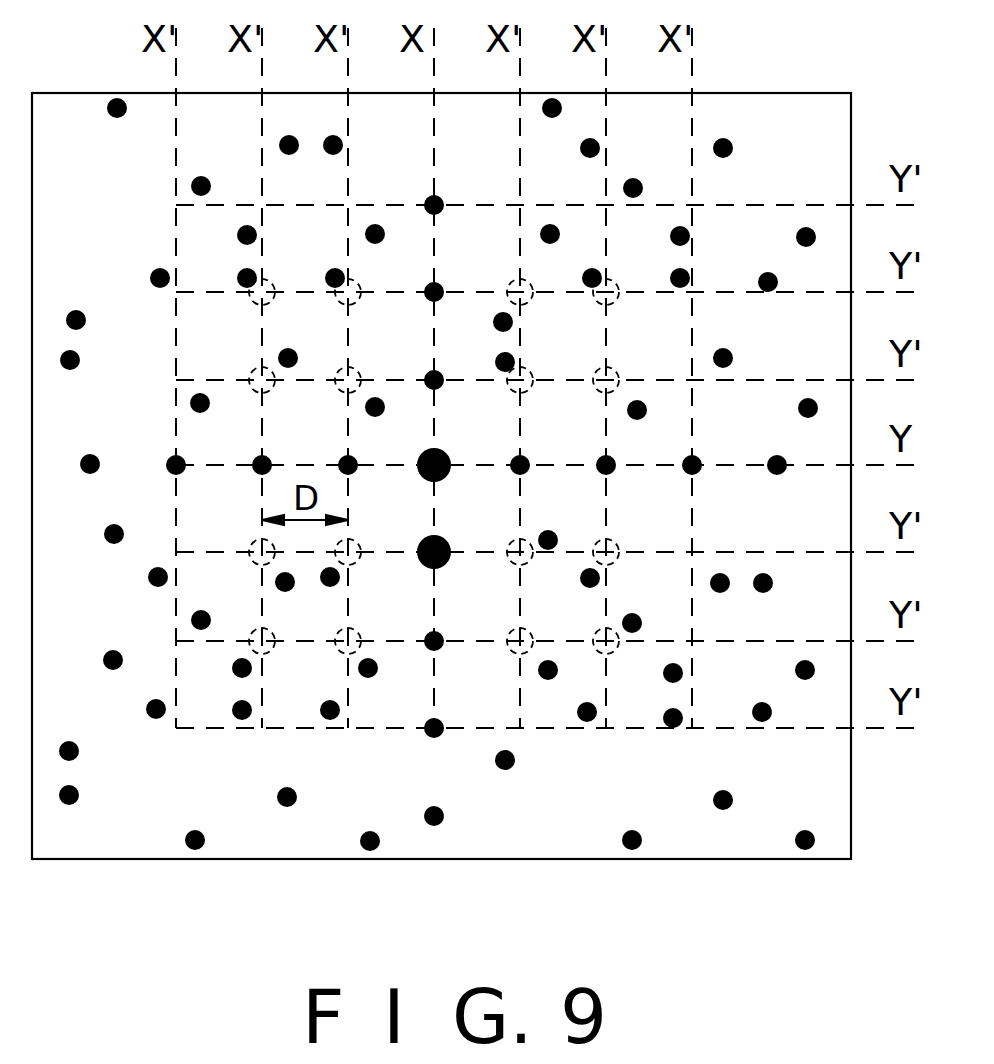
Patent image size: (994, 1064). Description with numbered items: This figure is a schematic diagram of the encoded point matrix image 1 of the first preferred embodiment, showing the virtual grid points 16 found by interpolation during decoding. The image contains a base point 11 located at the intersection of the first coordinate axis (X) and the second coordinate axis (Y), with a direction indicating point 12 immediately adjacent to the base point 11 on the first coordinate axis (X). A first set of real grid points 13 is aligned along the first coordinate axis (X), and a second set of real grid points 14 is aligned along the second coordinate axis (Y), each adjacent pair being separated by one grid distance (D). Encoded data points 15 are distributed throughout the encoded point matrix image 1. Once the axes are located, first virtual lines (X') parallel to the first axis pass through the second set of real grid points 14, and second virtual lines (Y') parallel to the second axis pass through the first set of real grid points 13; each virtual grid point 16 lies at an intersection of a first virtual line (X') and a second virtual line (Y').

The encoded point matrix image 1 is at (695, 687).
The base point 11 is at (441, 448).
The direction indicating point 12 is at (450, 548).
The first set of real grid points 13 is at (430, 376).
The second set of real grid points 14 is at (524, 470).
The encoded data points 15 is at (329, 590).
The virtual grid points 16 is at (254, 546).